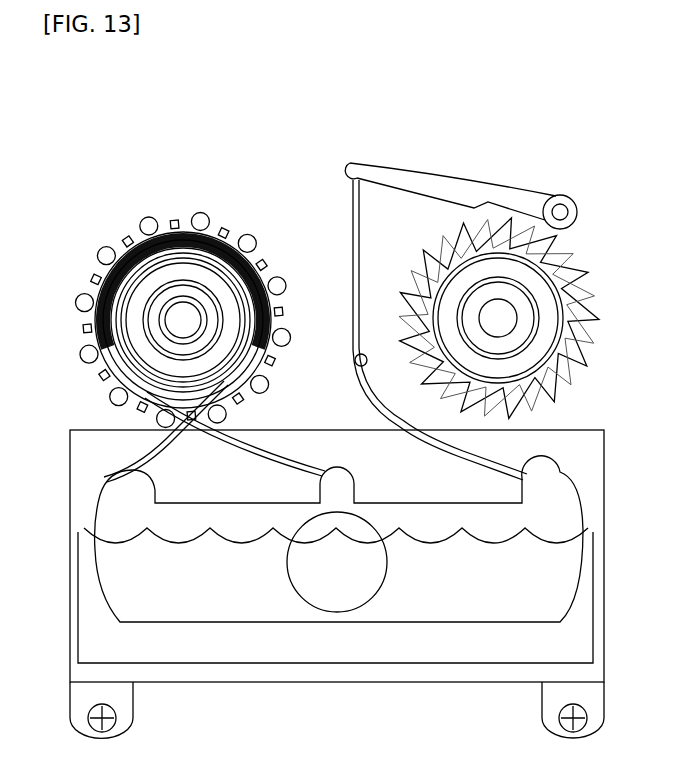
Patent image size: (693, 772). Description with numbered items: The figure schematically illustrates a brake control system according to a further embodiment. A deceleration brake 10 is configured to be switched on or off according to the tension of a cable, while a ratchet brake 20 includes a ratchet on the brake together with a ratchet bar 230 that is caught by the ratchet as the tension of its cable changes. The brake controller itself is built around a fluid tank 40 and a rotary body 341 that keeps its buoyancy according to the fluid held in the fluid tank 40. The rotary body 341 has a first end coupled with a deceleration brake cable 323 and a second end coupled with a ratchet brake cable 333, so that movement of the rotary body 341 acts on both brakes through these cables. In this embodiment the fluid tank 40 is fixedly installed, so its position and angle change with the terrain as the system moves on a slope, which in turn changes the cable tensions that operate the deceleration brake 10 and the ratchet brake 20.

The deceleration brake 10 is at (222, 236).
The ratchet brake 20 is at (592, 274).
The ratchet bar 230 is at (571, 212).
The fluid tank 40 is at (604, 492).
The deceleration brake cable 323 is at (153, 455).
The ratchet brake cable 333 is at (460, 457).
The rotary body 341 is at (462, 612).